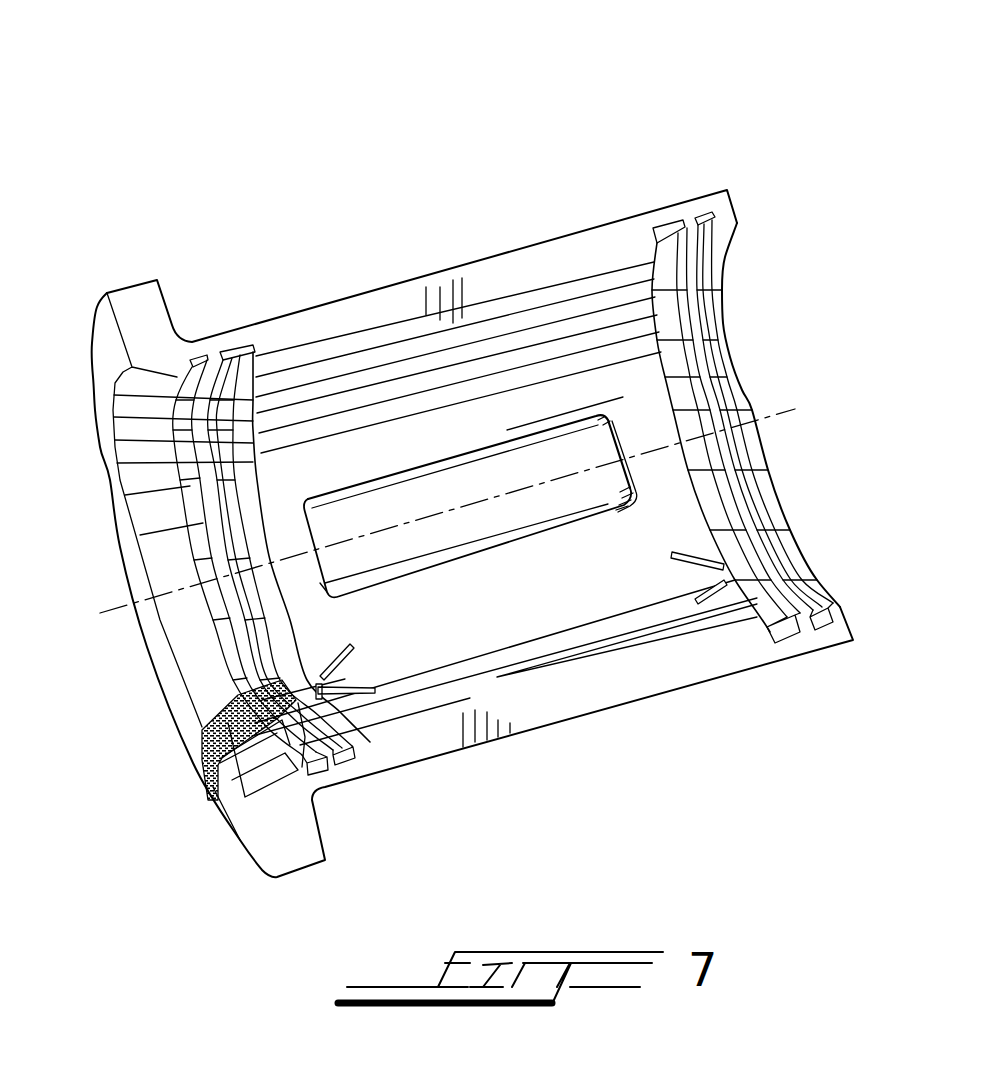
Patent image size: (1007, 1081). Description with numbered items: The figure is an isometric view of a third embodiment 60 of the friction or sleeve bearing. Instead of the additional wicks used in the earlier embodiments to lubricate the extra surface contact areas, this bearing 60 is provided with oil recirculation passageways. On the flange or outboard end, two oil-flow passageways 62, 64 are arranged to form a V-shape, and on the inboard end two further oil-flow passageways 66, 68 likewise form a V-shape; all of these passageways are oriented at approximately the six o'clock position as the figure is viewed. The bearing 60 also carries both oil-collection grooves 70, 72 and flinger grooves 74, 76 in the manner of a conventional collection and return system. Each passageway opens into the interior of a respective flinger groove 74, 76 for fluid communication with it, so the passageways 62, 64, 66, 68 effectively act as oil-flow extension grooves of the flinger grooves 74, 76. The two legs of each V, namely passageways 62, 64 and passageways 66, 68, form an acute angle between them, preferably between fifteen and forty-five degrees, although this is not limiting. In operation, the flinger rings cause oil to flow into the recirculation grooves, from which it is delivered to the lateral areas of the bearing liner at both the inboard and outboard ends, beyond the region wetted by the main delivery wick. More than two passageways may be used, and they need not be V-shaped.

The third embodiment 60 is at (477, 130).
The oil-flow passageway 62 is at (345, 648).
The oil-flow passageway 64 is at (352, 676).
The oil-flow passageway 66 is at (697, 556).
The oil-flow passageway 68 is at (722, 607).
The oil-collection groove 70 is at (207, 358).
The oil-collection groove 72 is at (706, 215).
The flinger groove 74 is at (242, 347).
The flinger groove 76 is at (670, 230).